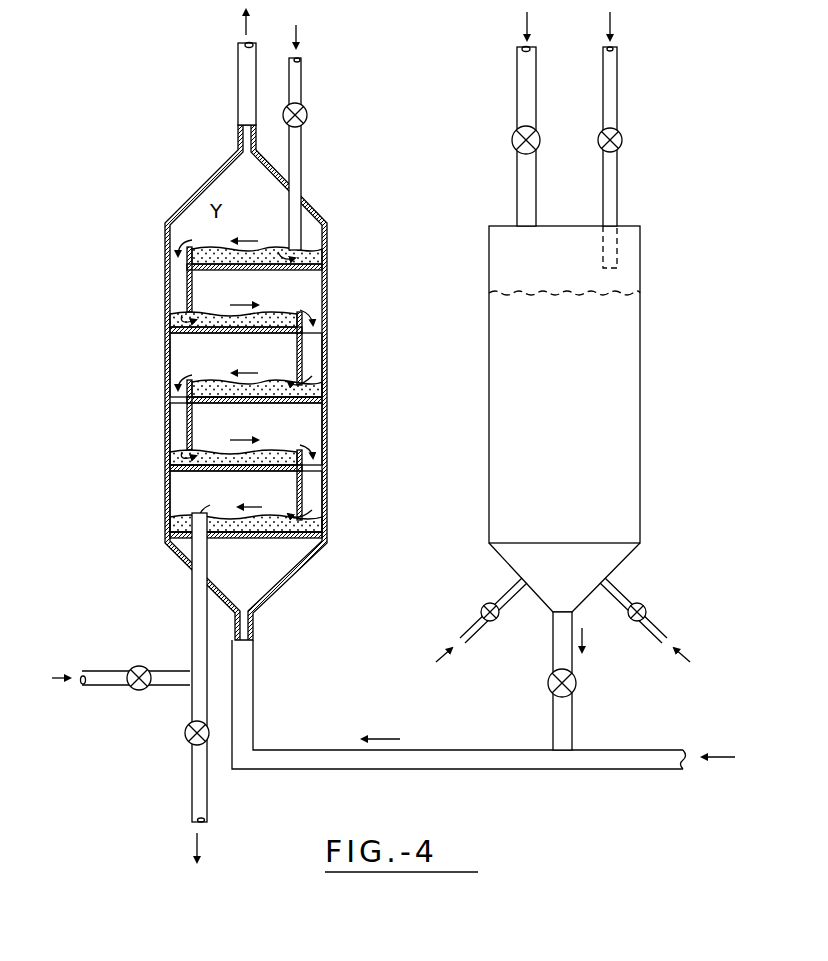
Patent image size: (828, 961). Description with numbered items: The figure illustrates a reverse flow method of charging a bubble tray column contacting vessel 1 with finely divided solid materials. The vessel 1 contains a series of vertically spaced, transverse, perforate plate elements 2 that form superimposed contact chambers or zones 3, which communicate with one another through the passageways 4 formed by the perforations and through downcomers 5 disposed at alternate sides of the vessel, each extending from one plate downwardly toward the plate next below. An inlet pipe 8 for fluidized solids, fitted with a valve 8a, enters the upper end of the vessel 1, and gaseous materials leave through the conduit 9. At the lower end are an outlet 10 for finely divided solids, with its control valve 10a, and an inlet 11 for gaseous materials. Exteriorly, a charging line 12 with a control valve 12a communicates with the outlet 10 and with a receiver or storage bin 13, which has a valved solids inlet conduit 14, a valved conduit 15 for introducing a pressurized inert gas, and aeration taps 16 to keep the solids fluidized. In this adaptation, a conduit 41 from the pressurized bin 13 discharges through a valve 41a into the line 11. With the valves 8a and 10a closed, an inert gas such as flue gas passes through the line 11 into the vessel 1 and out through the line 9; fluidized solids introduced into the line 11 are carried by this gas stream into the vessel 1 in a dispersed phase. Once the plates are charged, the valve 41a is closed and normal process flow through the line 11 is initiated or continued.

The bubble tray column contacting vessel 1 is at (327, 478).
The perforate plate elements 2 is at (322, 272).
The chambers 3 is at (185, 357).
The passageways 4 is at (208, 213).
The downcomers 5 is at (178, 283).
The inlet pipe 8 is at (303, 162).
The valve 8a is at (316, 107).
The conduit 9 is at (238, 94).
The outlet 10 is at (192, 590).
The control valve 10a is at (186, 736).
The inlet 11 is at (253, 688).
The charging line 12 is at (112, 666).
The control valve 12a is at (144, 690).
The receiver or storage bin 13 is at (641, 380).
The valved solids inlet conduit 14 is at (517, 88).
The valved conduit 15 is at (618, 95).
The aeration taps 16 is at (480, 616).
The conduit 41 is at (553, 720).
The valve 41a is at (577, 683).